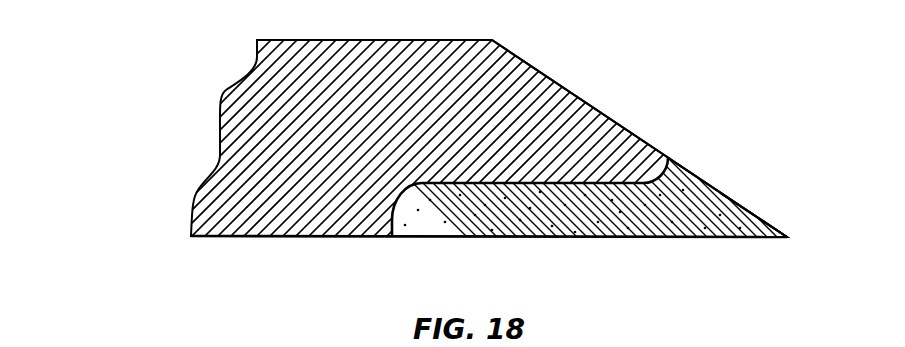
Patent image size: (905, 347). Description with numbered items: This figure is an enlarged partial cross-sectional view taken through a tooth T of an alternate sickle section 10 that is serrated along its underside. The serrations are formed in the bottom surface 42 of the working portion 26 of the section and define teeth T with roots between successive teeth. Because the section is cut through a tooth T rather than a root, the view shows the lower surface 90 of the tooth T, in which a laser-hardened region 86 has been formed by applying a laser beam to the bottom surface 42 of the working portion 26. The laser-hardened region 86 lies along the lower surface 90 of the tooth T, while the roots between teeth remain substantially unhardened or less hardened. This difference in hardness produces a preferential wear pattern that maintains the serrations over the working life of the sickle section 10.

The sickle section 10 is at (153, 79).
The working portion 26 is at (596, 60).
The bottom surface 42 is at (227, 233).
The laser-hardened region 86 is at (537, 217).
The lower surface 90 is at (676, 237).
The tooth T is at (756, 198).